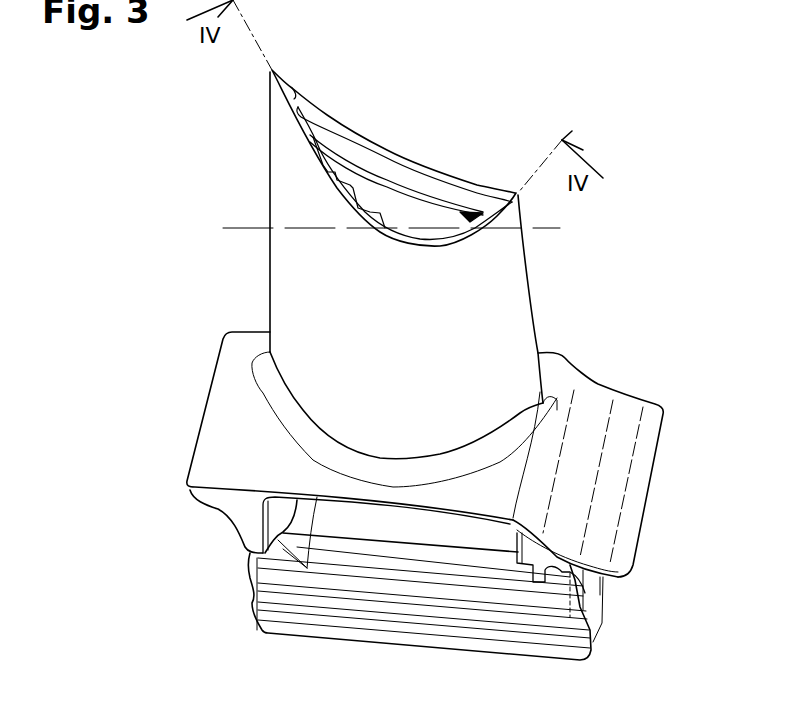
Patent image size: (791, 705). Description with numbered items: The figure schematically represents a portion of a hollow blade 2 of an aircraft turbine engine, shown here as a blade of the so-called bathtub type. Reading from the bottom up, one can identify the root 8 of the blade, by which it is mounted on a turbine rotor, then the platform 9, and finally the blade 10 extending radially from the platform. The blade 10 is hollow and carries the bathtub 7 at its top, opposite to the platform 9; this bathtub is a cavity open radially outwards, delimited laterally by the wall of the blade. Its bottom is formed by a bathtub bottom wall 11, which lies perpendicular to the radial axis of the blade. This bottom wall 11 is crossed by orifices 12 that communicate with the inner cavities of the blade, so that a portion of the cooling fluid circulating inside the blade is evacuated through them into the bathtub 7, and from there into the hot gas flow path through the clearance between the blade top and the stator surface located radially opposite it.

The hollow blade 2 is at (192, 377).
The bathtub 7 is at (418, 199).
The root 8 is at (375, 573).
The platform 9 is at (212, 467).
The blade 10 is at (480, 298).
The bathtub bottom wall 11 is at (443, 220).
The orifices 12 is at (390, 228).